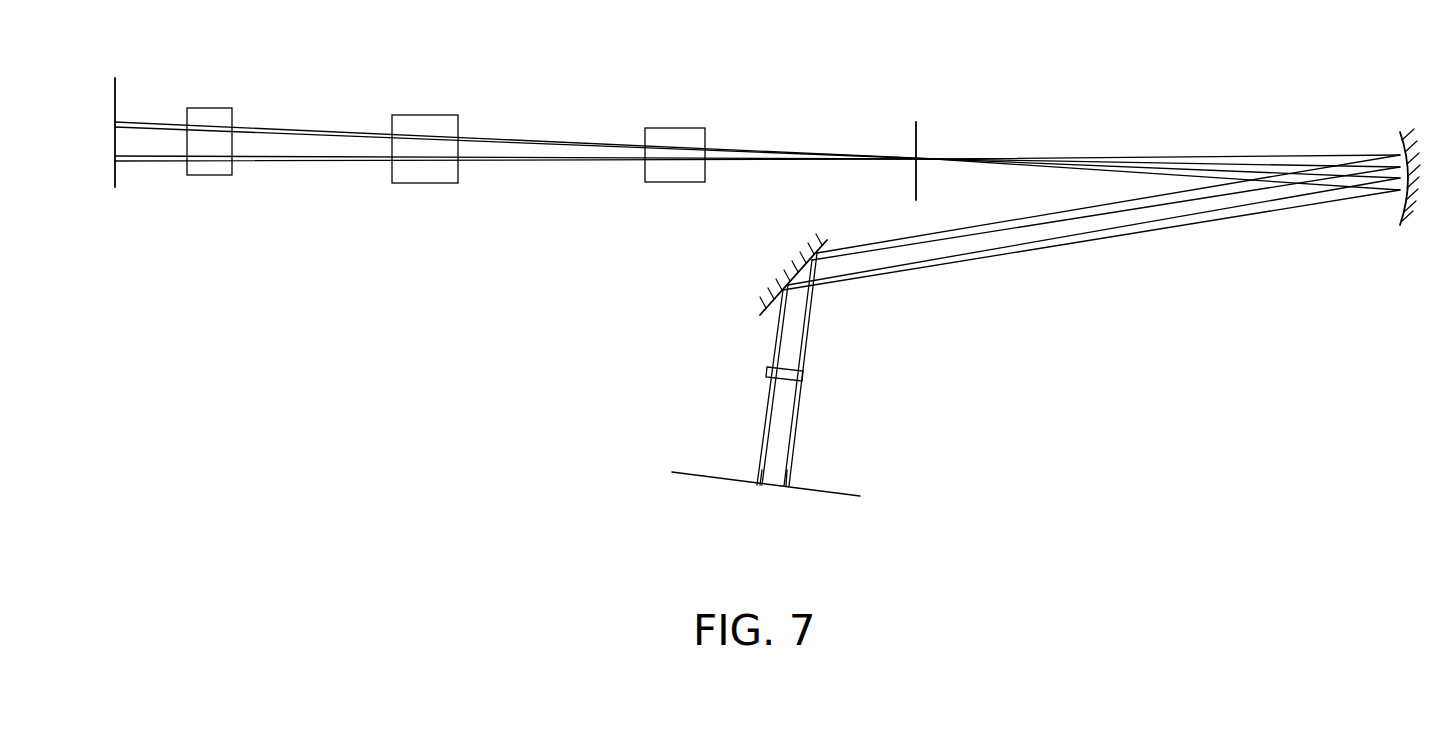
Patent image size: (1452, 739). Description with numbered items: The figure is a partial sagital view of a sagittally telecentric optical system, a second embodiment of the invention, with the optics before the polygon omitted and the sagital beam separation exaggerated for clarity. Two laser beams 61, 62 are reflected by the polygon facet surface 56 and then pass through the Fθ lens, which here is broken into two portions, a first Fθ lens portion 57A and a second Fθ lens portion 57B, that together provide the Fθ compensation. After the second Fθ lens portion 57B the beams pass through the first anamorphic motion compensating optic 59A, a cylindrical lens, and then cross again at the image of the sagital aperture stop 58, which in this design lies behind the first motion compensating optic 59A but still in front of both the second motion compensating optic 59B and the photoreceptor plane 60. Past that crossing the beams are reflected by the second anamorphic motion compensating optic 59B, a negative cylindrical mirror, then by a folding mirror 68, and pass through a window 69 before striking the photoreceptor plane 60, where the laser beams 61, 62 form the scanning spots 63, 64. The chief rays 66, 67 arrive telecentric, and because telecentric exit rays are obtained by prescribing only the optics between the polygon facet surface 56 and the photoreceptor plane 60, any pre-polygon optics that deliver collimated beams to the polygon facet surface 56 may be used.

The polygon facet surface 56 is at (118, 88).
The first Fθ lens portion (lens L3-1) 57A is at (217, 179).
The second Fθ lens portion (lens L3-2) 57B is at (428, 187).
The image of the sagital aperture stop 58 is at (918, 131).
The first anamorphic motion compensating optic (MCO-1) 59A is at (677, 184).
The second anamorphic motion compensating optic (MCO-2) 59B is at (1400, 212).
The photoreceptor plane 60 is at (830, 497).
The laser beam 61 is at (305, 163).
The laser beam 62 is at (315, 124).
The scanning spot 63 is at (785, 492).
The scanning spot 64 is at (756, 492).
The chief ray 66 is at (799, 410).
The chief ray 67 is at (759, 430).
The folding mirror 68 is at (763, 306).
The window 69 is at (803, 374).